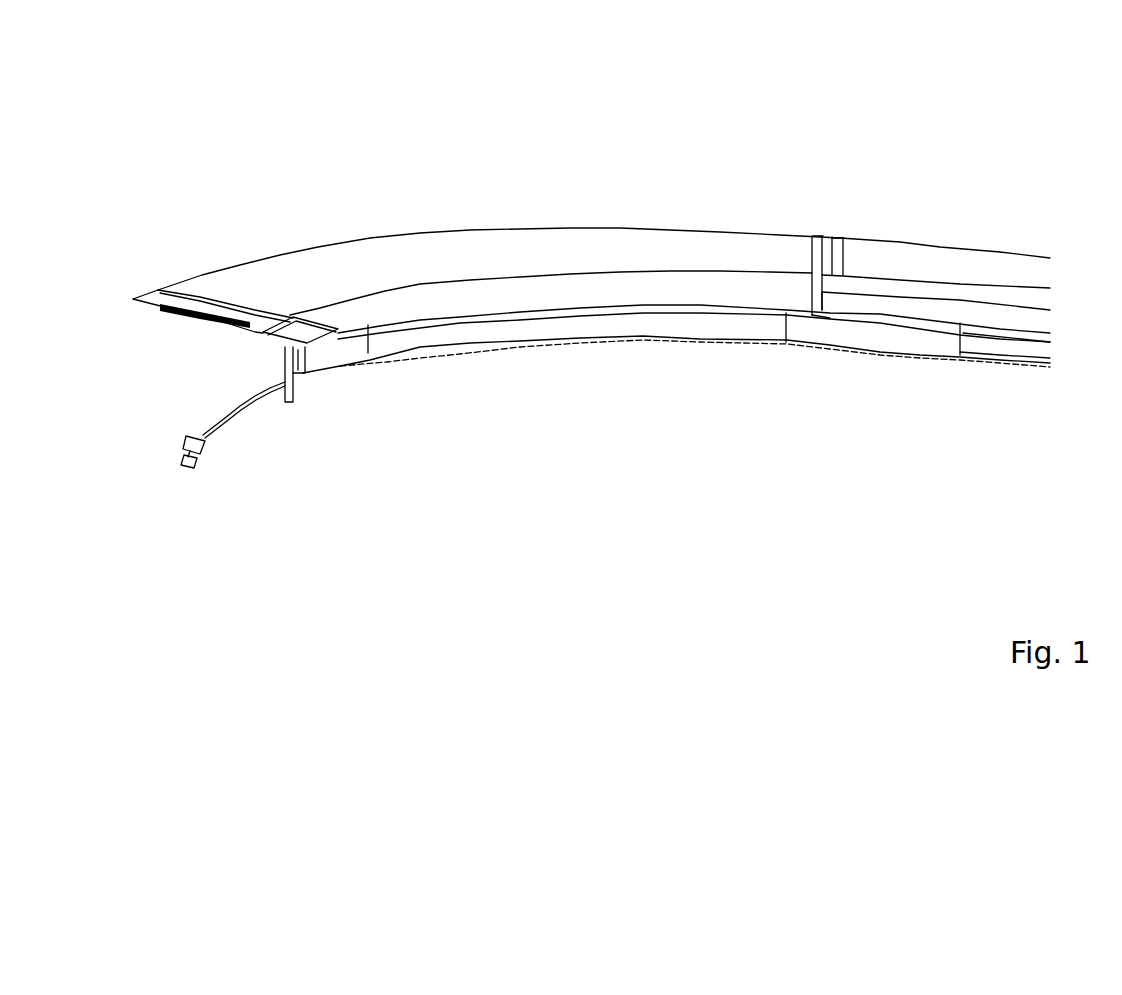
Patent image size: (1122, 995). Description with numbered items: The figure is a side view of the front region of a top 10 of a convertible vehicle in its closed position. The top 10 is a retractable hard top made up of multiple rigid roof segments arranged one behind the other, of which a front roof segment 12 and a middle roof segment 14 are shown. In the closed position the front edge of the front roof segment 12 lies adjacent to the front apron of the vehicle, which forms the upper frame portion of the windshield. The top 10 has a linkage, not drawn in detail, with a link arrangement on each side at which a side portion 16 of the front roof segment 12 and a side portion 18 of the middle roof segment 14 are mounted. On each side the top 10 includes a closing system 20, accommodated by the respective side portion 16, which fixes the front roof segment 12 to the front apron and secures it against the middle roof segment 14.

The top 10 is at (591, 254).
The front roof segment 12 is at (318, 263).
The middle roof segment 14 is at (975, 268).
The side portion of the front roof segment 16 is at (643, 287).
The side portion of the middle roof segment 18 is at (988, 312).
The closing system 20 is at (440, 368).